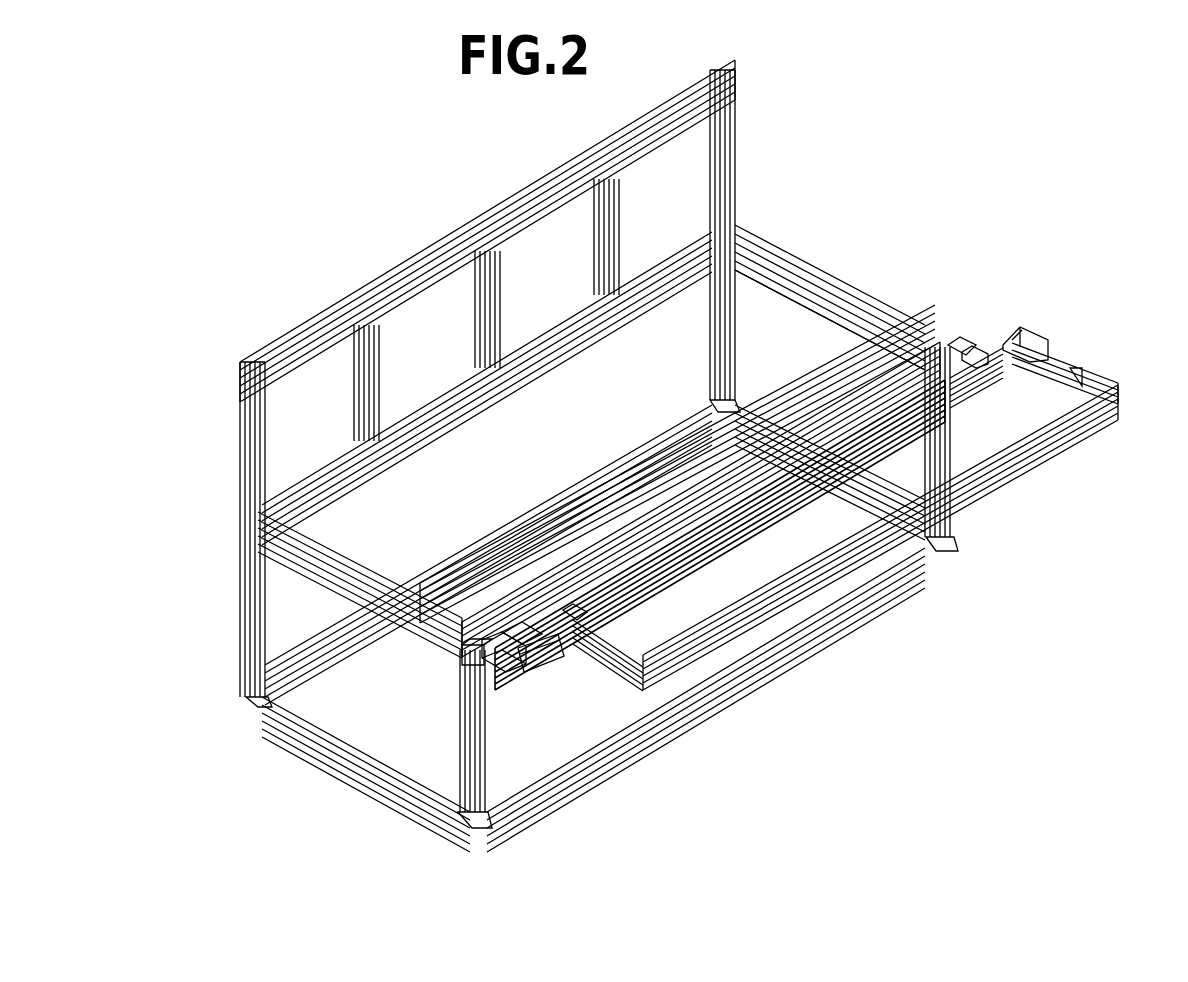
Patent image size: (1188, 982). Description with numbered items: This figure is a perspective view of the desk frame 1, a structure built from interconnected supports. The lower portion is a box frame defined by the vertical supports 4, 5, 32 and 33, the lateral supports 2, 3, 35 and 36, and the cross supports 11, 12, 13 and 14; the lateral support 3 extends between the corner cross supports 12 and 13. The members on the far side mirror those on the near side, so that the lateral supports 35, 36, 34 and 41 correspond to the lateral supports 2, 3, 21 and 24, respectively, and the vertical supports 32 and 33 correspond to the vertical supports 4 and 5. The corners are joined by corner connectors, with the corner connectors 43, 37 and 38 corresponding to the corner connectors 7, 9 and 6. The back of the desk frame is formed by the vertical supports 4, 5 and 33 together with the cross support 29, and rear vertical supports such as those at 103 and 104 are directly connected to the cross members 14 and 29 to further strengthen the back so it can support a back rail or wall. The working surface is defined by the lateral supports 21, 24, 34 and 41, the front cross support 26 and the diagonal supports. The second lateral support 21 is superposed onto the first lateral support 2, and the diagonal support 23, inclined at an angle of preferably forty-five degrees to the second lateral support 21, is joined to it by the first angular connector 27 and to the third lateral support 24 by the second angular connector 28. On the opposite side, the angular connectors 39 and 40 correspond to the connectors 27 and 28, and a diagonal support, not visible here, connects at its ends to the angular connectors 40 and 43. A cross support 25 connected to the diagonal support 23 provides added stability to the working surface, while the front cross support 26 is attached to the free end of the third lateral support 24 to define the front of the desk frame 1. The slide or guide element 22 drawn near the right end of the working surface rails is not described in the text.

The desk frame 1 is at (206, 393).
The first lateral support 2 is at (285, 580).
The lateral support 3 is at (380, 782).
The second vertical support 4 is at (240, 455).
The first vertical support 5 is at (492, 773).
The corner connector 6 is at (470, 830).
The corner connector 7 is at (462, 670).
The corner connector 9 is at (252, 712).
The first cross support 11 is at (633, 540).
The corner cross support 12 is at (703, 700).
The corner cross support 13 is at (527, 510).
The corner cross support 14 is at (475, 383).
The second lateral support 21 is at (367, 563).
The guide rail 22 is at (935, 325).
The diagonal support 23 is at (533, 652).
The third lateral support 24 is at (613, 637).
The cross support 25 is at (960, 393).
The front cross support 26 is at (765, 615).
The first angular connector 27 is at (505, 668).
The second angular connector 28 is at (565, 662).
The cross support 29 is at (420, 248).
The vertical support 32 is at (710, 305).
The vertical support 33 is at (952, 427).
The lateral support 34 is at (780, 233).
The lateral support 35 is at (838, 322).
The lateral support 36 is at (852, 495).
The corner connector 37 is at (707, 398).
The corner connector 38 is at (952, 540).
The angular connector 39 is at (968, 356).
The angular connector 40 is at (1017, 325).
The lateral support 41 is at (1093, 365).
The corner connector 43 is at (955, 348).
The rear vertical support 103 is at (350, 395).
The rear vertical support 104 is at (592, 255).